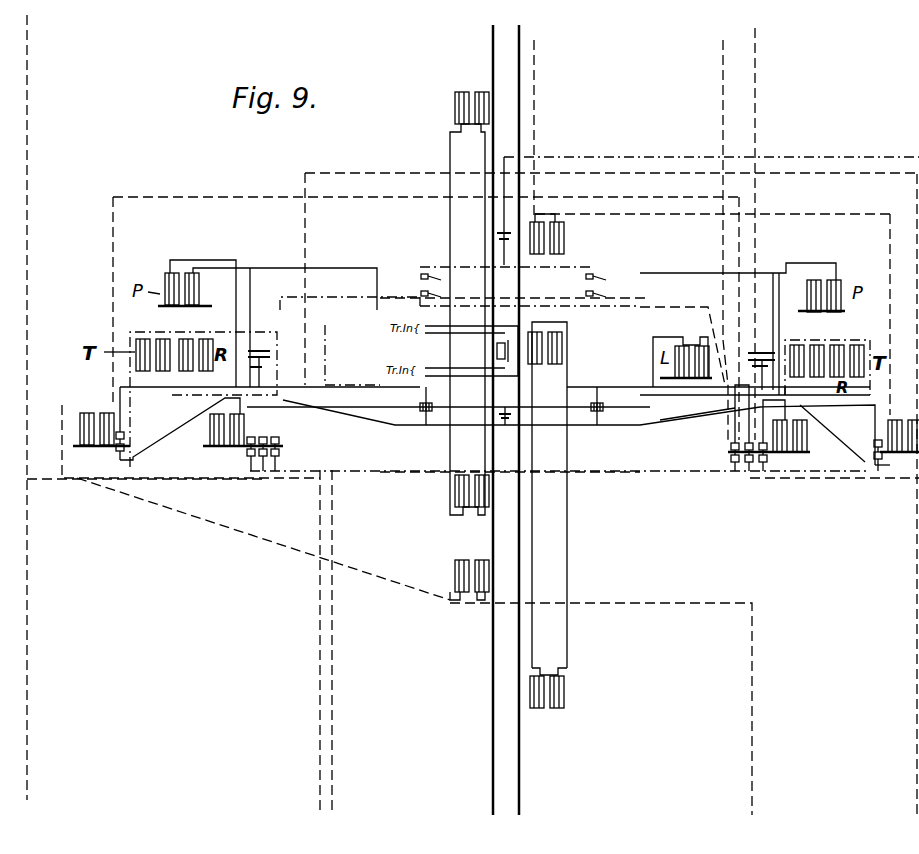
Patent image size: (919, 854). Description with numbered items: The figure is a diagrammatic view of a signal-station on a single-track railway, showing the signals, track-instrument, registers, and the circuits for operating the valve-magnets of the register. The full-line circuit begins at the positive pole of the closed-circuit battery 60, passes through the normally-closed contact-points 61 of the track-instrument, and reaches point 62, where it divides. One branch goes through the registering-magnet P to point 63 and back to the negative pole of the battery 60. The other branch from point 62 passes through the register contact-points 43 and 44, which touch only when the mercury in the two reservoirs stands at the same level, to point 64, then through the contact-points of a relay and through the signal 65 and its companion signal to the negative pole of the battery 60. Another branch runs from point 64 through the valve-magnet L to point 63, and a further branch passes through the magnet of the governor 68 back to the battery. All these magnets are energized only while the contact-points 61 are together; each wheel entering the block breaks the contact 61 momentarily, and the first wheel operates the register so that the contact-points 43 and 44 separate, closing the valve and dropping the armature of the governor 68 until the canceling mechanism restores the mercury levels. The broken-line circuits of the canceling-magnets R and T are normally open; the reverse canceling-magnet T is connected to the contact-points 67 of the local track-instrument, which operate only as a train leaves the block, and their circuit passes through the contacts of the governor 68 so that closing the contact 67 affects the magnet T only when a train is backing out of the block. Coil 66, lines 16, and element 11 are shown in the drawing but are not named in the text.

The polar relay P 11 is at (198, 307).
The conductor 16 is at (781, 318).
The contact-point 43 is at (260, 350).
The contact-point 44 is at (510, 374).
The battery 60 is at (482, 346).
The contact-points of the track-instrument 61 is at (522, 407).
The dividing point of the circuit 62 is at (770, 273).
The return point of the circuit 63 is at (660, 420).
The circuit point beyond the register contacts 64 is at (775, 388).
The signal 65 is at (560, 350).
The relay coil 66 is at (563, 688).
The contact-points of the track-instrument 67 is at (428, 272).
The governor 68 is at (806, 447).